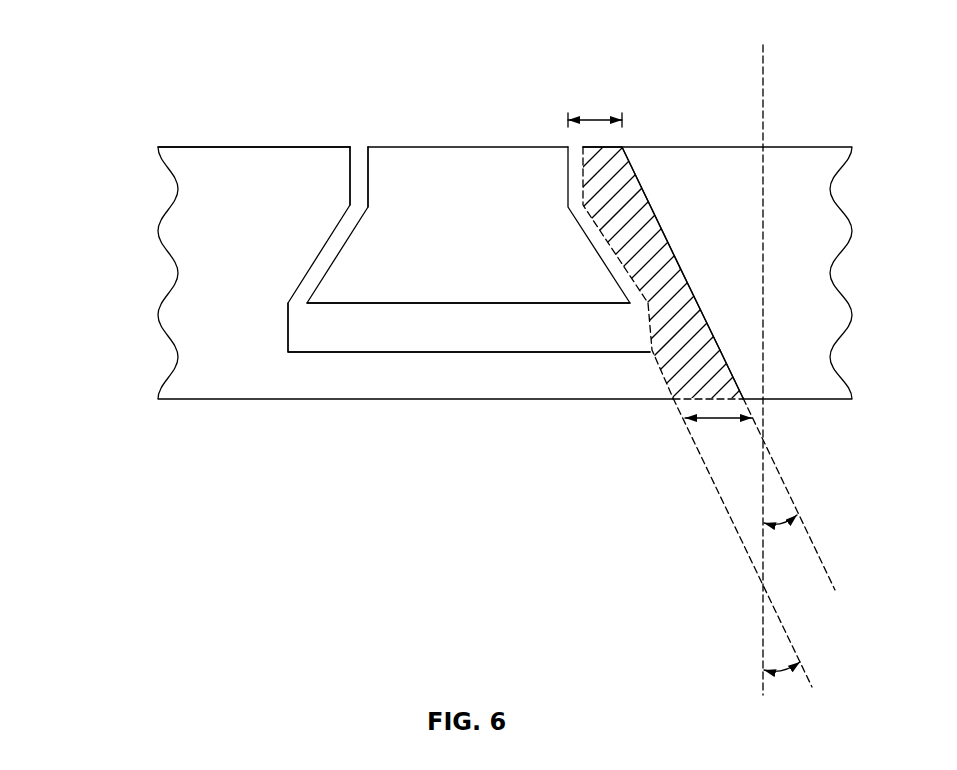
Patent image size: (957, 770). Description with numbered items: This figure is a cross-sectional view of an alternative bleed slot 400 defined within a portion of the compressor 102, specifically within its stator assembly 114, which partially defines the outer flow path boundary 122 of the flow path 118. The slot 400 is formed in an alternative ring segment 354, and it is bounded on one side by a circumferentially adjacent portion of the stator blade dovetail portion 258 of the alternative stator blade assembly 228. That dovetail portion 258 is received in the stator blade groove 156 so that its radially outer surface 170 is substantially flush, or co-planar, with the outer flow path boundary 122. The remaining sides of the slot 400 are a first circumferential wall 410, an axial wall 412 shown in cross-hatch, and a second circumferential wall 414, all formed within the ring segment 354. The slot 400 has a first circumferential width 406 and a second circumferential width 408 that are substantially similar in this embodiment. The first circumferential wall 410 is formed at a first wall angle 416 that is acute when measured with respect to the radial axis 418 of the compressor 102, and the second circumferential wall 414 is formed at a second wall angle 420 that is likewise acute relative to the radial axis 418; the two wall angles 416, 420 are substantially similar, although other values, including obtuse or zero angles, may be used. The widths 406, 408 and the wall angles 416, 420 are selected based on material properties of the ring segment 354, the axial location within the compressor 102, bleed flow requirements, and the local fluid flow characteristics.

The compressor 102 is at (131, 51).
The stator assembly 114 is at (200, 102).
The flow path 118 is at (797, 100).
The outer flow path boundary 122 is at (220, 147).
The alternative ring segment 354 is at (277, 207).
The stator blade dovetail portion 258 is at (492, 260).
The stator blade assembly 228 is at (401, 141).
The radially outer surface 170 is at (482, 147).
The first circumferential width 406 is at (597, 117).
The stator blade groove 156 is at (311, 326).
The bleed slot 400 is at (659, 276).
The first circumferential wall 410 is at (662, 225).
The axial wall 412 is at (670, 337).
The second circumferential wall 414 is at (660, 367).
The second circumferential width 408 is at (703, 420).
The radial axis 418 is at (765, 423).
The first wall angle 416 is at (783, 532).
The second wall angle 420 is at (783, 678).